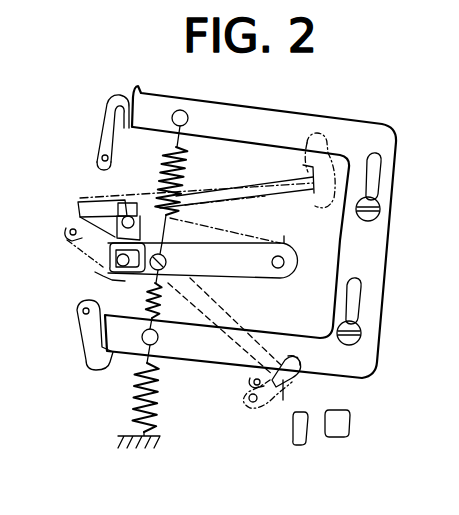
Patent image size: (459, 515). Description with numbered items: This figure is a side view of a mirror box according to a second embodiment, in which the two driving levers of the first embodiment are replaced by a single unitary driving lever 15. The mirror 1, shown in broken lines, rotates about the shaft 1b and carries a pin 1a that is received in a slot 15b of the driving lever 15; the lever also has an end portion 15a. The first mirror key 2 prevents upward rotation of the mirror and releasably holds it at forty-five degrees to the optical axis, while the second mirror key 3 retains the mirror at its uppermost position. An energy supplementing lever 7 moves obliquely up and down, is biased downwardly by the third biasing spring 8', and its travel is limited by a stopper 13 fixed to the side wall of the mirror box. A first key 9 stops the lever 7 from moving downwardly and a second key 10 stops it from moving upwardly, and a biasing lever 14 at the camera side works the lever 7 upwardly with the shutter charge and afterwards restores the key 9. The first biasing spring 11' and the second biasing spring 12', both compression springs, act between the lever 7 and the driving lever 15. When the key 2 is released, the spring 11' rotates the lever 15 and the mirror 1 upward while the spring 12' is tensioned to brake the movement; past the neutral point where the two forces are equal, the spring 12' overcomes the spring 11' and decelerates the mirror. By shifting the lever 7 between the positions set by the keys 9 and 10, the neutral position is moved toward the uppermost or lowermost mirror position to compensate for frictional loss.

The mirror 1 is at (200, 308).
The pin 1a is at (103, 275).
The shaft 1b is at (68, 226).
The first mirror key 2 is at (284, 402).
The second mirror key 3 is at (300, 160).
The energy supplementing lever 7 is at (377, 271).
The third biasing spring 8' is at (116, 396).
The first key 9 is at (80, 338).
The second key 10 is at (98, 131).
The first biasing spring 11' is at (194, 176).
The second biasing spring 12' is at (129, 310).
The stopper 13 is at (336, 437).
The biasing lever 14 is at (300, 445).
The driving lever 15 is at (265, 280).
The arm end 15a is at (284, 240).
The slot 15b is at (108, 262).